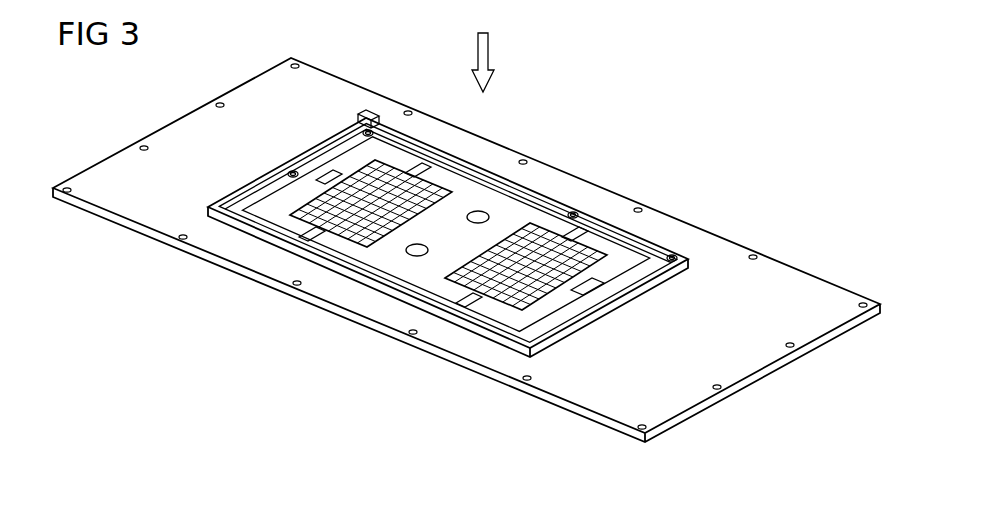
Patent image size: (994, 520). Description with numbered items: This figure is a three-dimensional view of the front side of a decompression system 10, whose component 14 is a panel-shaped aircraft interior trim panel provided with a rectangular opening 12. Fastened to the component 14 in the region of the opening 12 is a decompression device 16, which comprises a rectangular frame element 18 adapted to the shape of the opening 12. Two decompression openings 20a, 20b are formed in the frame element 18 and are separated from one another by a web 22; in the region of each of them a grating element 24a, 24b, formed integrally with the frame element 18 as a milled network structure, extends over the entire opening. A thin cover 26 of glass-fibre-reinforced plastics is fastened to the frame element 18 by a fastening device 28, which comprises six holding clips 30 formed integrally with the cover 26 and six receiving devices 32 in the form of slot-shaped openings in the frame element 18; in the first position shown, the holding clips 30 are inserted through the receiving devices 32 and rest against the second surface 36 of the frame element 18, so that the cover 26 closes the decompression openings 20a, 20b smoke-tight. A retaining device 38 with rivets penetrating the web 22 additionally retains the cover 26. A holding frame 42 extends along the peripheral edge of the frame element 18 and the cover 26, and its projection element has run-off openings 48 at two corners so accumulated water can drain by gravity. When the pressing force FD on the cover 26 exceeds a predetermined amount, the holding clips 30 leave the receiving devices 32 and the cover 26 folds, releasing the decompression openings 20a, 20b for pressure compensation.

The decompression system 10 is at (556, 108).
The opening 12 is at (536, 187).
The component 14 is at (773, 282).
The decompression device 16 is at (330, 122).
The frame element 18 is at (458, 206).
The decompression opening 20a is at (363, 246).
The decompression opening 20b is at (533, 308).
The web 22 is at (489, 198).
The grating element 24a is at (338, 234).
The grating element 24b is at (495, 300).
The cover 26 is at (590, 258).
The fastening device 28 is at (592, 292).
The holding clip 30 is at (326, 177).
The receiving device 32 is at (557, 290).
The second surface 36 is at (630, 260).
The retaining device 38 is at (443, 245).
The holding frame 42 is at (258, 242).
The run-off opening 48 is at (365, 118).
The pressing force FD is at (487, 62).